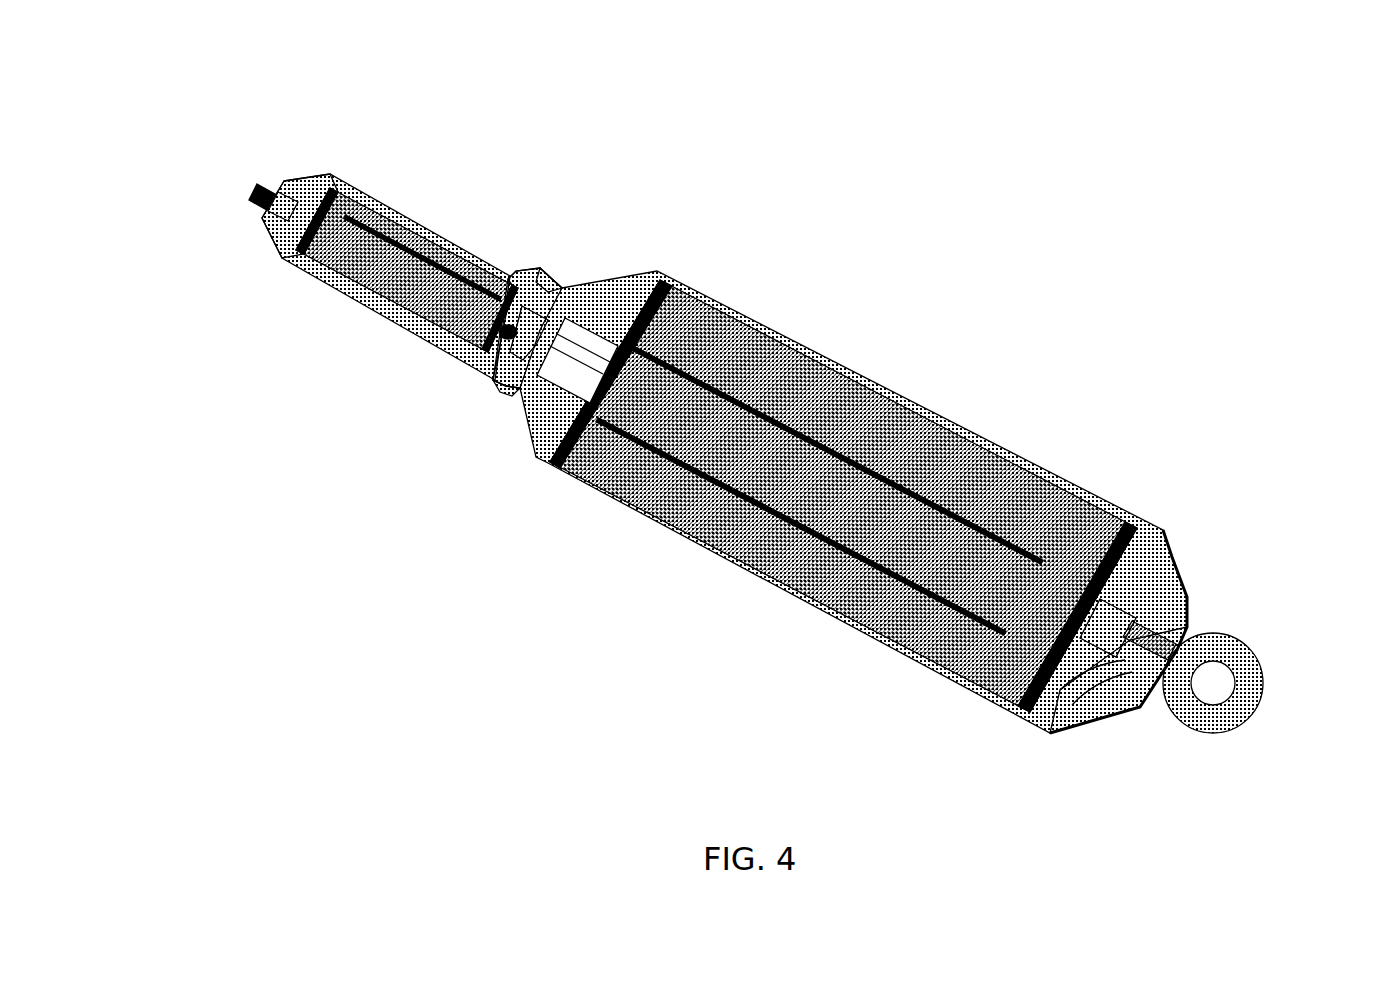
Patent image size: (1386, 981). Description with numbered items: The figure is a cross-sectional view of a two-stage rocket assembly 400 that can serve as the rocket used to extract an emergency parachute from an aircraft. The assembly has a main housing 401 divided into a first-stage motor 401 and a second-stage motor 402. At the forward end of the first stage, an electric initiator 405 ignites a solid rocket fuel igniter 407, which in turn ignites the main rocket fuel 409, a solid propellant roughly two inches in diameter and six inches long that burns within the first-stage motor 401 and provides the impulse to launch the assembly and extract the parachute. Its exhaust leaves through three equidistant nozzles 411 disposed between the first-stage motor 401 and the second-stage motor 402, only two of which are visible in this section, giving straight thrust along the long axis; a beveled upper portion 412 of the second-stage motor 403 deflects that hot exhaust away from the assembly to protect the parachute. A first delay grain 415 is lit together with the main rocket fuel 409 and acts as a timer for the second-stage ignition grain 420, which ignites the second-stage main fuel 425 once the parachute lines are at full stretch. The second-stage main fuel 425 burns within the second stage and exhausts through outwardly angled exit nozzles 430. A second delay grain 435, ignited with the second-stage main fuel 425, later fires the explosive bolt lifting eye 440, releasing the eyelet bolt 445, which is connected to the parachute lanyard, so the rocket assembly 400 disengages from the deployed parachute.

The rocket assembly 400 is at (771, 366).
The first-stage motor 401 is at (1128, 103).
The second-stage motor 402 is at (422, 244).
The second-stage motor 403 is at (865, 461).
The electric initiator 405 is at (256, 189).
The solid rocket fuel igniter 407 is at (290, 233).
The main rocket fuel 409 is at (387, 268).
The nozzles 411 is at (566, 283).
The beveled upper portion 412 is at (520, 407).
The first delay grain 415 is at (476, 372).
The second-stage ignition grain 420 is at (568, 390).
The second-stage main fuel 425 is at (843, 496).
The exit nozzles 430 is at (1103, 729).
The second delay grain 435 is at (1122, 612).
The explosive bolt lifting eye 440 is at (1170, 662).
The eyelet bolt 445 is at (1227, 729).